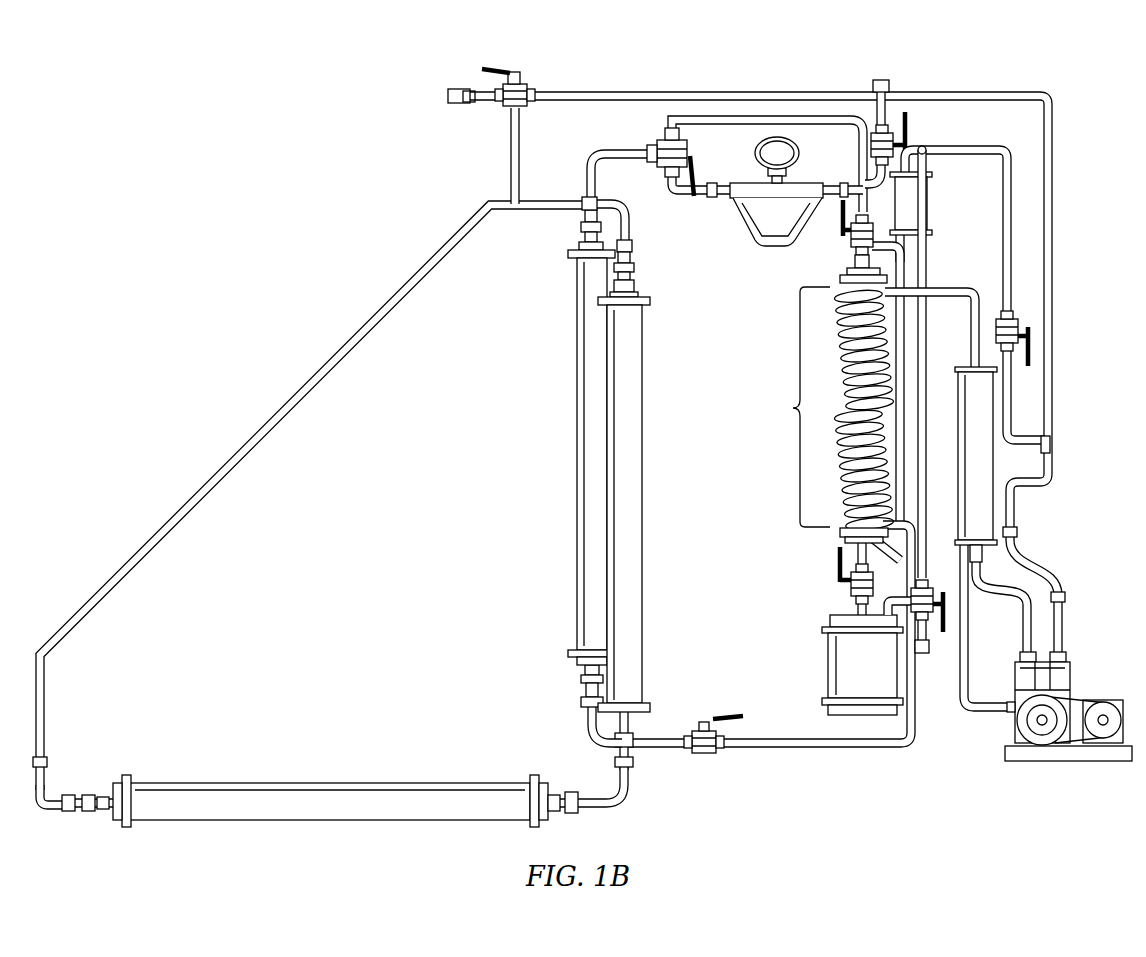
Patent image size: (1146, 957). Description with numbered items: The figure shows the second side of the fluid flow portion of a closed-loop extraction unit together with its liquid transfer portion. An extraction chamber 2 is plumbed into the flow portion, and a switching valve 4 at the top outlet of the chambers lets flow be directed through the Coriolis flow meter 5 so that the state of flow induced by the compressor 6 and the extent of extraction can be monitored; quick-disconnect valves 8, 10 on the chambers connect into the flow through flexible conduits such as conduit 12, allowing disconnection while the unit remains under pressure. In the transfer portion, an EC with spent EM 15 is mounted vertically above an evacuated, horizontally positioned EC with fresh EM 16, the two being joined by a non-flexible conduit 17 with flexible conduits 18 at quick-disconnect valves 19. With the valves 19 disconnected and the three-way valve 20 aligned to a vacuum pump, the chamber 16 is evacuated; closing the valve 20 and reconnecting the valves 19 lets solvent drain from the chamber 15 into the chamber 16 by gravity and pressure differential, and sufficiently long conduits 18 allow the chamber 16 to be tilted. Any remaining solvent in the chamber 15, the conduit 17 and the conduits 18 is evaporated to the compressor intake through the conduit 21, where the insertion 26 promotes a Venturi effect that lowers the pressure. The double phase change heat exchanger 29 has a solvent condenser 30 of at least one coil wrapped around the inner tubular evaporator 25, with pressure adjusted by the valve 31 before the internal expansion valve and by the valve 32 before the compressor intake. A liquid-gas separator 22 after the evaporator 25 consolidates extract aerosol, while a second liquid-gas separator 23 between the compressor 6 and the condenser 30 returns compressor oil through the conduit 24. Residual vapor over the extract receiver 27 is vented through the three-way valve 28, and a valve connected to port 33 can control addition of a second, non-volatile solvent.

The extraction chamber (EC) 2 is at (585, 322).
The switching valve 4 is at (655, 143).
The Coriolis flow meter 5 is at (755, 186).
The compressor 6 is at (1070, 690).
The quick-disconnect valve 8 is at (590, 224).
The quick-disconnect valve 10 is at (586, 686).
The conduit 12 is at (600, 157).
The EC with spent EM 15 is at (632, 346).
The EC with fresh EM 16 is at (264, 786).
The non-flexible conduit 17 is at (215, 481).
The flexible conduit 18 is at (620, 213).
The quick-disconnect valve 19 is at (632, 276).
The three-way valve 20 is at (525, 80).
The conduit 21 is at (610, 92).
The liquid-gas separator (LGS) 22 is at (924, 187).
The liquid-gas separator (LGS) 23 is at (961, 414).
The conduit 24 is at (960, 695).
The tubular EXC (evaporator) 25 is at (838, 300).
The insertion 26 is at (1050, 440).
The extract receiver 27 is at (826, 618).
The three-way valve 28 is at (930, 590).
The double phase change heat exchanger (HE) 29 is at (796, 407).
The solvent condenser (SC) 30 is at (838, 422).
The valve 31 is at (852, 248).
The valve 32 is at (998, 319).
The port 33 is at (872, 134).